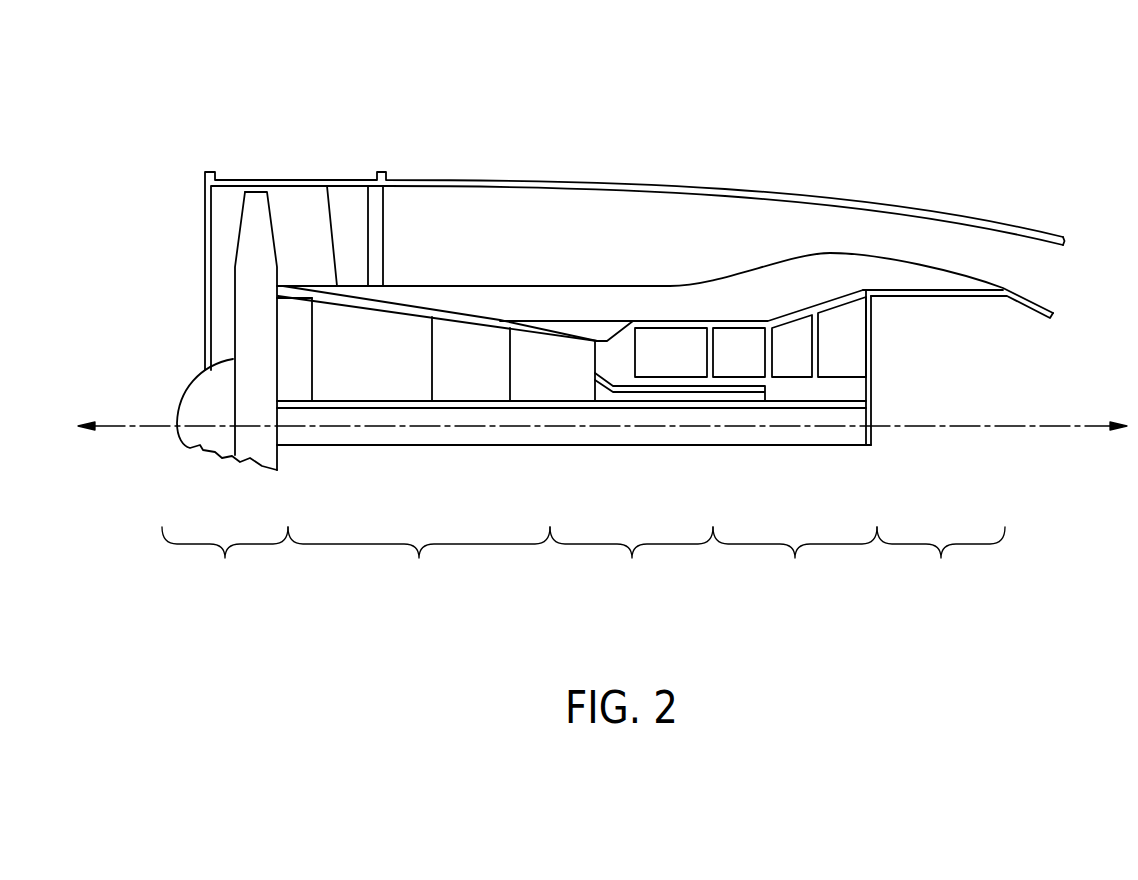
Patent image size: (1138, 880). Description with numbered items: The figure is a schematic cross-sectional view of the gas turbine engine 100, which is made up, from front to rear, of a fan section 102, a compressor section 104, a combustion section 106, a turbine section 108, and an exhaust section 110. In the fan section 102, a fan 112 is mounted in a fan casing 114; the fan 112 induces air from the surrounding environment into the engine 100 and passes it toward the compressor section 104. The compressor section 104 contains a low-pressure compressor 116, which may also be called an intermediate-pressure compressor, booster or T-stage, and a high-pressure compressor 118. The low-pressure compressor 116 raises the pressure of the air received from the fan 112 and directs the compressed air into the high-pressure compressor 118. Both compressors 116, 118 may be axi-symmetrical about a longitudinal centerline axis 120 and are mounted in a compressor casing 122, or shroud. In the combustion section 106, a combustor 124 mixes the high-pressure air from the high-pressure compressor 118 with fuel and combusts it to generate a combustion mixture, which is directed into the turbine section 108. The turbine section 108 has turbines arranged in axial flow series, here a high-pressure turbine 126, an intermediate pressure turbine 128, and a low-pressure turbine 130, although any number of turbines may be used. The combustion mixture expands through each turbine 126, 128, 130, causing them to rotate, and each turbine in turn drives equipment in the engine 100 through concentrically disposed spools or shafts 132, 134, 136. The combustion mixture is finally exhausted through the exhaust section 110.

The gas turbine engine 100 is at (416, 133).
The fan section 102 is at (225, 560).
The compressor section 104 is at (419, 560).
The combustion section 106 is at (631, 560).
The turbine section 108 is at (795, 560).
The exhaust section 110 is at (941, 560).
The fan 112 is at (248, 286).
The fan casing 114 is at (303, 180).
The low-pressure compressor 116 is at (378, 390).
The high-pressure compressor 118 is at (556, 390).
The longitudinal centerline axis 120 is at (1050, 428).
The compressor casing 122 is at (578, 325).
The combustor 124 is at (682, 340).
The high-pressure turbine 126 is at (743, 343).
The intermediate pressure turbine 128 is at (797, 331).
The low-pressure turbine 130 is at (852, 322).
The spool or shaft 132 is at (637, 387).
The spool or shaft 134 is at (718, 403).
The spool or shaft 136 is at (785, 437).